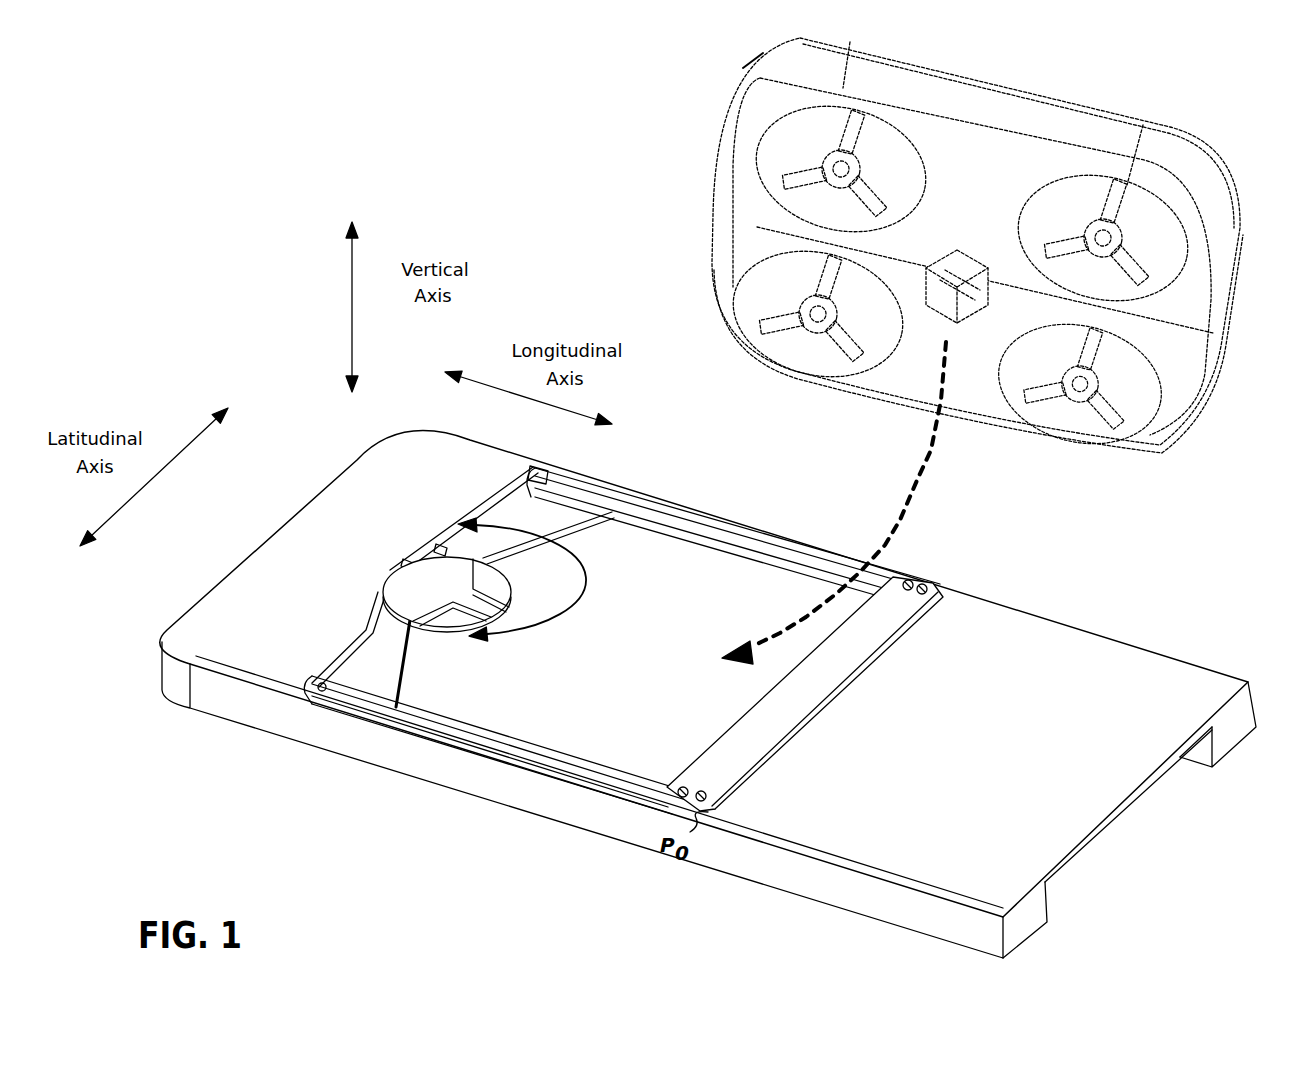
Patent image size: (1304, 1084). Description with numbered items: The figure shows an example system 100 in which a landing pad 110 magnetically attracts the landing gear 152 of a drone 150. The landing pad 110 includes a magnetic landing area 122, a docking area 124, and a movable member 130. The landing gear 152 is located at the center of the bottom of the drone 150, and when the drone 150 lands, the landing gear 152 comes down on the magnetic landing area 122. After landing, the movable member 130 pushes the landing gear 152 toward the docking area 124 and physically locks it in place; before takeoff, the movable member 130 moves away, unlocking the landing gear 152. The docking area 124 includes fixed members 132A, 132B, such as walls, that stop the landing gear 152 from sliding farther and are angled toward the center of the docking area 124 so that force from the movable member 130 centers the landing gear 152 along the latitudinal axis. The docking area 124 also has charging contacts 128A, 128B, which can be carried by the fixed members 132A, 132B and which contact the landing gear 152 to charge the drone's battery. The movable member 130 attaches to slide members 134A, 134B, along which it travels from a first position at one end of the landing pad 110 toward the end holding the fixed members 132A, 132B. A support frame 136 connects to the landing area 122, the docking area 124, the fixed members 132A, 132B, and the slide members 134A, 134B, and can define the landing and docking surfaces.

The system 100 is at (150, 124).
The landing pad 110 is at (265, 542).
The magnetic landing area 122 is at (620, 612).
The docking area 124 is at (439, 603).
The charging contact 128A is at (392, 600).
The charging contact 128B is at (412, 553).
The movable member 130 is at (706, 748).
The fixed member 132A is at (372, 628).
The fixed member 132B is at (466, 528).
The slide member 134A is at (478, 776).
The slide member 134B is at (702, 540).
The support frame 136 is at (1010, 752).
The drone 150 is at (717, 178).
The landing gear 152 is at (963, 262).